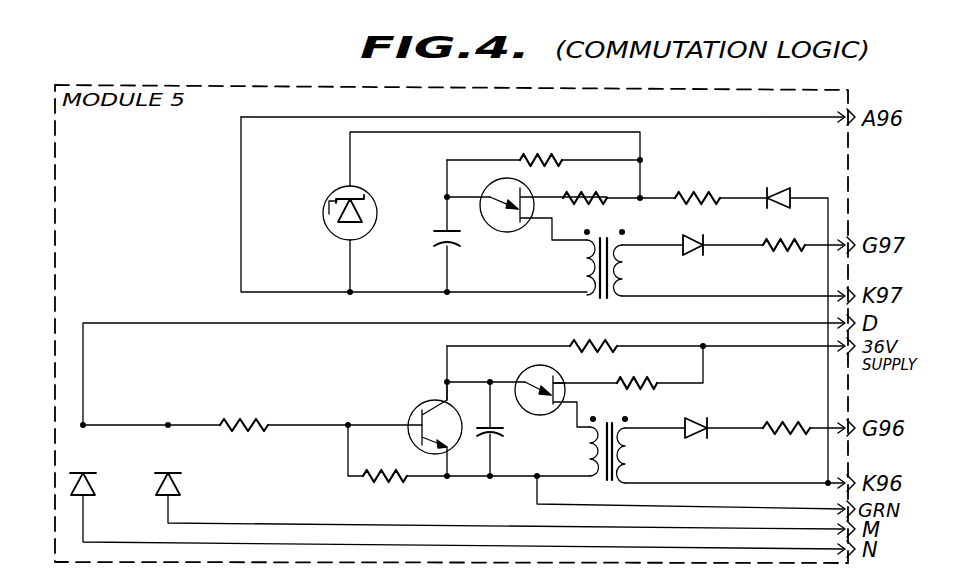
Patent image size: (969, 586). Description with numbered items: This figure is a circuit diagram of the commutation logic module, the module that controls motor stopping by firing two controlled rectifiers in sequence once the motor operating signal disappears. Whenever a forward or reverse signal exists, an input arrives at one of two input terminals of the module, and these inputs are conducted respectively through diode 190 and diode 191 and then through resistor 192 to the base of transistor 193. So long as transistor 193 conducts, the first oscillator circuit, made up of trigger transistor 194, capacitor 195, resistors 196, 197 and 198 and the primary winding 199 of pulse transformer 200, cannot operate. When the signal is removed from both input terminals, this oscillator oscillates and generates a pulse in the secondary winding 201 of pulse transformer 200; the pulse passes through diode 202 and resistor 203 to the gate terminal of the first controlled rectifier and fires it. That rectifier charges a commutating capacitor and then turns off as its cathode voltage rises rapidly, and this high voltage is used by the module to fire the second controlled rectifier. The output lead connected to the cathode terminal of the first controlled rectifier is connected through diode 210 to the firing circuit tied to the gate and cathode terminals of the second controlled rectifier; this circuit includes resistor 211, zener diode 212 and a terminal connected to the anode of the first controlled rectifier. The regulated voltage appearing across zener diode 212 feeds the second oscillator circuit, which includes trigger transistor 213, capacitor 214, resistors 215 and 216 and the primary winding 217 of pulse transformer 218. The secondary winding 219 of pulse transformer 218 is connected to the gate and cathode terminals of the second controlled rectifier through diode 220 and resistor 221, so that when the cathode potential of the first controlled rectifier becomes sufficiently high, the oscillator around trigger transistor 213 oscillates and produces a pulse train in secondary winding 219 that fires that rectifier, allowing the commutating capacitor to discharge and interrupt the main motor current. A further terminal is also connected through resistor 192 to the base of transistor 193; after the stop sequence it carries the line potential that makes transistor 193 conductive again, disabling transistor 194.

The diode 190 is at (182, 485).
The diode 191 is at (90, 492).
The resistor 192 is at (252, 416).
The transistor 193 is at (425, 392).
The trigger transistor 194 is at (524, 377).
The capacitor 195 is at (504, 436).
The resistor 196 is at (386, 480).
The resistor 197 is at (589, 350).
The resistor 198 is at (632, 380).
The primary winding 199 is at (579, 450).
The pulse transformer 200 is at (618, 411).
The secondary winding 201 is at (640, 451).
The diode 202 is at (705, 424).
The resistor 203 is at (801, 440).
The diode 210 is at (774, 192).
The resistor 211 is at (697, 194).
The zener diode 212 is at (369, 196).
The trigger transistor 213 is at (497, 232).
The capacitor 214 is at (433, 243).
The resistor 215 is at (526, 157).
The resistor 216 is at (605, 193).
The primary winding 217 is at (584, 264).
The pulse transformer 218 is at (598, 299).
The secondary winding 219 is at (628, 264).
The diode 220 is at (700, 254).
The resistor 221 is at (779, 252).